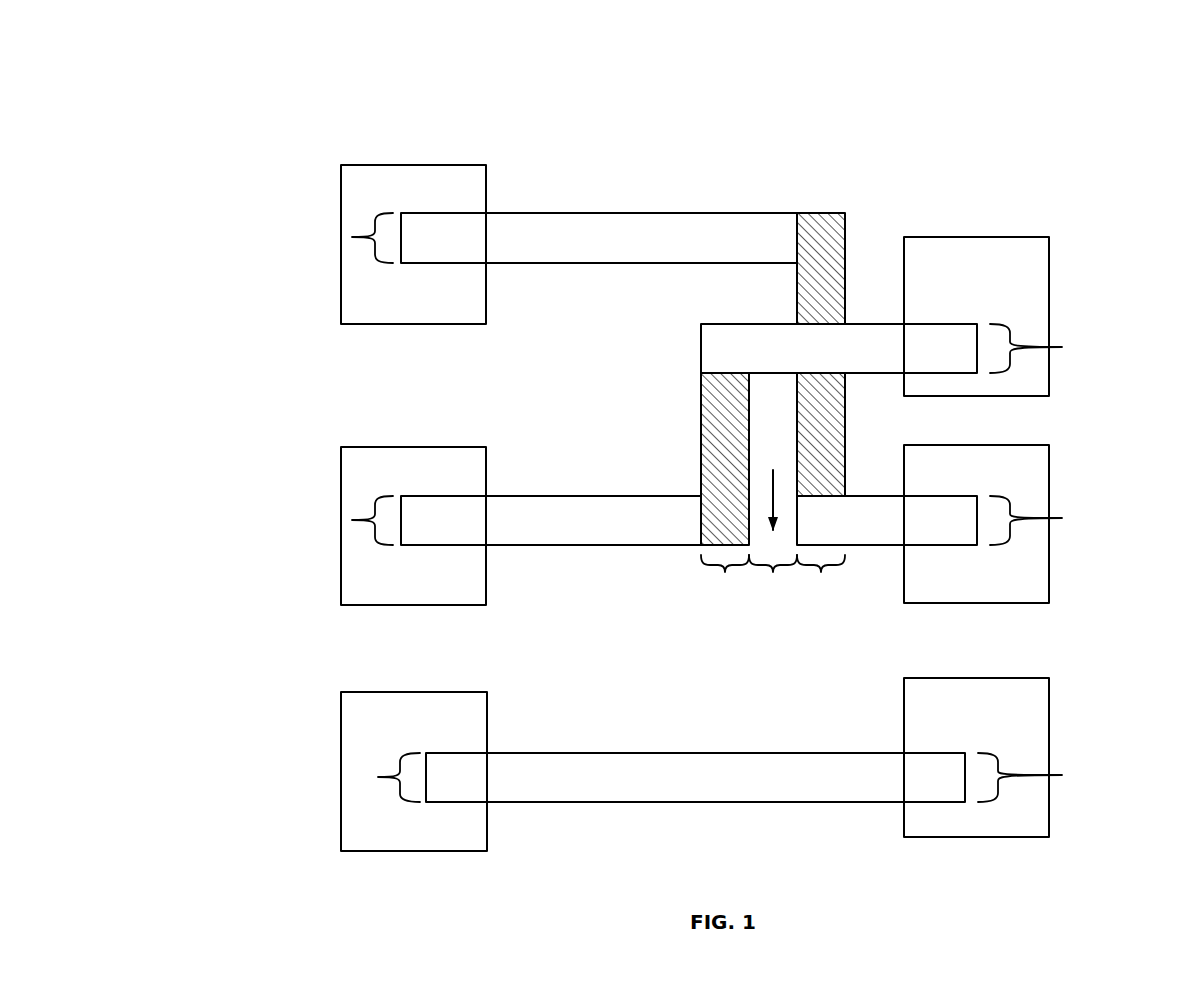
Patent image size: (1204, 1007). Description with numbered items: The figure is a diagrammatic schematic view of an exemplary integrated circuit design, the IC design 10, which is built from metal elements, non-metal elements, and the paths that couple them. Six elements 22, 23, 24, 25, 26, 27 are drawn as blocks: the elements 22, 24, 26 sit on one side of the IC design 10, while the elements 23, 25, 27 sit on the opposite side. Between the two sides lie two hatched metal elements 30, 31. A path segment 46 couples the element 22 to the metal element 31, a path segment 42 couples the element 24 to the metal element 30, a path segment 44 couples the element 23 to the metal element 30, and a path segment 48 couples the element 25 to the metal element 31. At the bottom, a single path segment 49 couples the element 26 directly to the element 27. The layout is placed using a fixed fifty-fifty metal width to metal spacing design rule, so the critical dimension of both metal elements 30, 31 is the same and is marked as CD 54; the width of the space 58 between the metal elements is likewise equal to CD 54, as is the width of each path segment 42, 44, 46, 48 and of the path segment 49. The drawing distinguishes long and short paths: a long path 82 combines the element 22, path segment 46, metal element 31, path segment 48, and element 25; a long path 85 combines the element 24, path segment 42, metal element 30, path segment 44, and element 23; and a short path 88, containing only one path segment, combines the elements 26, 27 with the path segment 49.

The IC design 10 is at (1110, 90).
The element 22 is at (378, 165).
The element 23 is at (1002, 237).
The element 24 is at (370, 447).
The element 25 is at (978, 445).
The element 26 is at (370, 690).
The element 27 is at (978, 678).
The metal element 30 is at (700, 422).
The metal element 31 is at (820, 213).
The path segment 42 is at (560, 496).
The path segment 44 is at (858, 322).
The path segment 46 is at (568, 213).
The path segment 48 is at (855, 492).
The path segment 49 is at (560, 753).
The CD 54 is at (380, 213).
The space 58 is at (776, 488).
The long path 82 is at (268, 165).
The long path 85 is at (268, 435).
The short path 88 is at (268, 692).